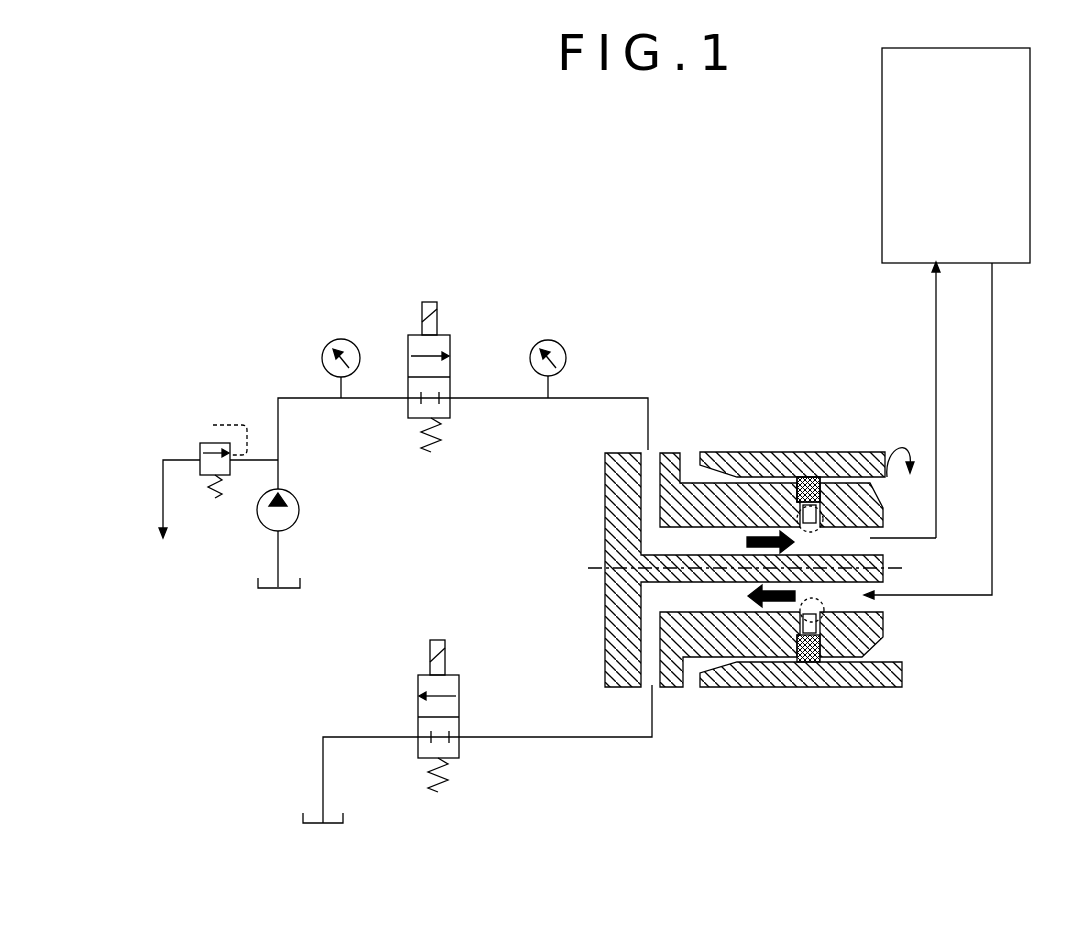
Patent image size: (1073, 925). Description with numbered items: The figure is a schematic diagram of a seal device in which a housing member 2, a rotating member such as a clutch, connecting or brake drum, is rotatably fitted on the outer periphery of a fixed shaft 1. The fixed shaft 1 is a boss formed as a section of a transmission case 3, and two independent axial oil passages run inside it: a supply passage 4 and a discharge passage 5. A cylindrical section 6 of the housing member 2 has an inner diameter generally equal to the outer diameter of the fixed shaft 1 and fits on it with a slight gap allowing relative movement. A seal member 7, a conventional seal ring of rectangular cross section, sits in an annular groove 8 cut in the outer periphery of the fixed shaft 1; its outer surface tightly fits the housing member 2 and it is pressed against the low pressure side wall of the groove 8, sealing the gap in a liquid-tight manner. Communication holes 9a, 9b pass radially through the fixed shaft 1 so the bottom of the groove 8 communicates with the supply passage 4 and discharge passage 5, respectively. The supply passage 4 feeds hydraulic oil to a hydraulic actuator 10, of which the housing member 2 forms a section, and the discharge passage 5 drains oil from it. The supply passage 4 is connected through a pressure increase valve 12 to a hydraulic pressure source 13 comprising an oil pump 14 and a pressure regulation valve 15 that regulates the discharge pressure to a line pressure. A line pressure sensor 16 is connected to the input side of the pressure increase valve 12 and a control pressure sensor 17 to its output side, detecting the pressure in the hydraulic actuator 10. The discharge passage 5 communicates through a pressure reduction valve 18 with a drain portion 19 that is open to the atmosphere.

The fixed shaft 1 is at (873, 640).
The housing member 2 is at (778, 697).
The transmission case 3 is at (613, 497).
The supply passage 4 is at (682, 540).
The discharge passage 5 is at (679, 592).
The cylindrical section 6 is at (813, 455).
The seal member 7 is at (835, 455).
The annular groove 8 is at (802, 452).
The communication hole 9a is at (818, 511).
The communication hole 9b is at (817, 622).
The hydraulic actuator 10 is at (882, 152).
The pressure increase valve 12 is at (450, 340).
The hydraulic pressure source 13 is at (244, 530).
The oil pump 14 is at (300, 512).
The pressure regulation valve 15 is at (200, 447).
The line pressure sensor 16 is at (341, 339).
The control pressure sensor 17 is at (548, 340).
The pressure reduction valve 18 is at (418, 690).
The drain portion 19 is at (303, 818).